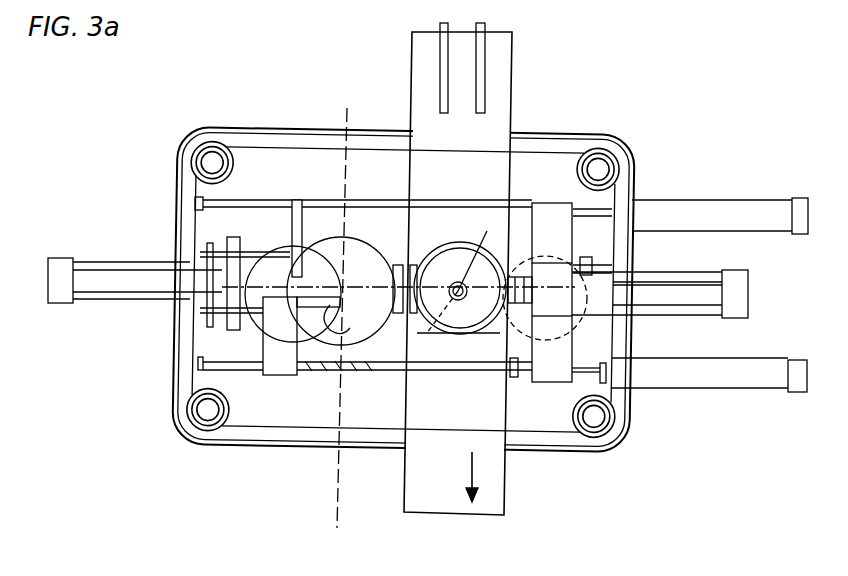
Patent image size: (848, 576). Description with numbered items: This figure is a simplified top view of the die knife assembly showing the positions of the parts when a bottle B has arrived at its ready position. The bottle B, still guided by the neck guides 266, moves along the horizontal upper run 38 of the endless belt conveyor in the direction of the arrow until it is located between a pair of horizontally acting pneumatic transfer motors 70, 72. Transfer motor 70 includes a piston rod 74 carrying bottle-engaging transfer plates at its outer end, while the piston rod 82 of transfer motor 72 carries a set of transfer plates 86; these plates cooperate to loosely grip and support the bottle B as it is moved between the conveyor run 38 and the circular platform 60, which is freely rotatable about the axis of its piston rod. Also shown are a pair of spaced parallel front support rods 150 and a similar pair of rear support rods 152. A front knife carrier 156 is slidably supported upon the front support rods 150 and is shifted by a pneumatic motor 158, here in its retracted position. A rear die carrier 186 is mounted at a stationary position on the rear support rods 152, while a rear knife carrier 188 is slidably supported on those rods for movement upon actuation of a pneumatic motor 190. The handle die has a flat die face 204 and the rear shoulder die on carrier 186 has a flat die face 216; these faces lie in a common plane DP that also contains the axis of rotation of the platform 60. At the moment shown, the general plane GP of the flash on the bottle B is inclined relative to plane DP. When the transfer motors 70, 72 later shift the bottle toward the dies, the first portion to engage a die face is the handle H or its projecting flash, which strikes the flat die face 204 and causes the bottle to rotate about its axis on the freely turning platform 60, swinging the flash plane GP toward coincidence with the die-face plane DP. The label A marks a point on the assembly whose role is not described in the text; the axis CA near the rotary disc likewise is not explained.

The upper run of endless belt conveyor 38 is at (449, 486).
The neck guides 266 is at (452, 76).
The common plane of flat die faces DP is at (339, 320).
The rear knife carrier 188 is at (551, 210).
The front knife carrier 156 is at (549, 375).
The piston rod 74 is at (570, 290).
The pneumatic transfer motor 70 is at (700, 312).
The pneumatic motor 190 is at (692, 208).
The pneumatic motor 158 is at (717, 380).
The pneumatic transfer motor 72 is at (96, 278).
The piston rod 82 is at (222, 283).
The transfer plates 86 is at (248, 332).
The flat die face 204 is at (338, 338).
The rear die carrier 186 is at (299, 202).
The gear A is at (340, 290).
The flat die face 216 is at (346, 244).
The circular platform 60 is at (360, 338).
The rear support rods 152 is at (438, 247).
The front support rods 150 is at (436, 368).
The bottle B is at (458, 330).
The cam axis CA is at (449, 292).
The general plane of the flash GP is at (457, 274).
The handle H is at (477, 303).